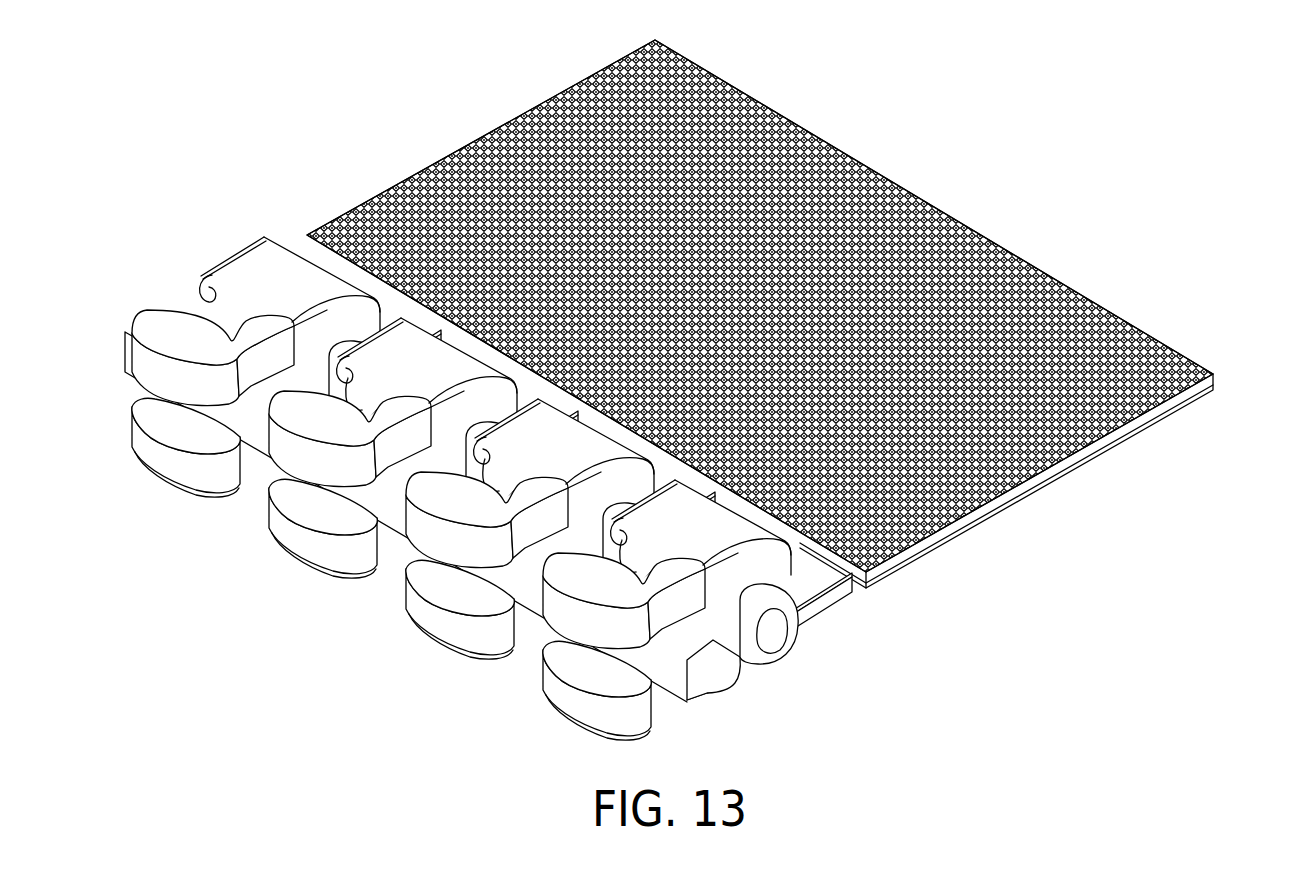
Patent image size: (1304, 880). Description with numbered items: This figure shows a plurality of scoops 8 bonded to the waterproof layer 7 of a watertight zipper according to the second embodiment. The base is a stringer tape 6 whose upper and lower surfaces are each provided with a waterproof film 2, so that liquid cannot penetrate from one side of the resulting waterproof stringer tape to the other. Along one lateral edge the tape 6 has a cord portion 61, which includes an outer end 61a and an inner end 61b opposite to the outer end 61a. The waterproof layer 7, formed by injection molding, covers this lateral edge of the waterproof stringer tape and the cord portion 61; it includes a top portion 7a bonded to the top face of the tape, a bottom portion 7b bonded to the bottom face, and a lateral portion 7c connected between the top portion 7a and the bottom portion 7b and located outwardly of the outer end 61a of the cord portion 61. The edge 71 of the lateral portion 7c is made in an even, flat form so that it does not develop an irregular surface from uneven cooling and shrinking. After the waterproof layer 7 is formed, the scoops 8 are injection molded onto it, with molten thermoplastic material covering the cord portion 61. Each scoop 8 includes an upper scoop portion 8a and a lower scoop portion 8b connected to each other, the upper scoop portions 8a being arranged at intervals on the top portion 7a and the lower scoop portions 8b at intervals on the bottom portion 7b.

The waterproof film 2 is at (1155, 347).
The stringer tape 6 is at (1207, 380).
The cord portion 61 is at (757, 647).
The outer end 61a is at (668, 667).
The inner end 61b is at (835, 548).
The waterproof layer 7 is at (818, 650).
The top portion 7a is at (822, 592).
The bottom portion 7b is at (813, 622).
The lateral portion 7c is at (710, 673).
The edge 71 is at (233, 418).
The scoop 8 is at (719, 623).
The upper scoop portion 8a is at (580, 625).
The lower scoop portion 8b is at (583, 710).